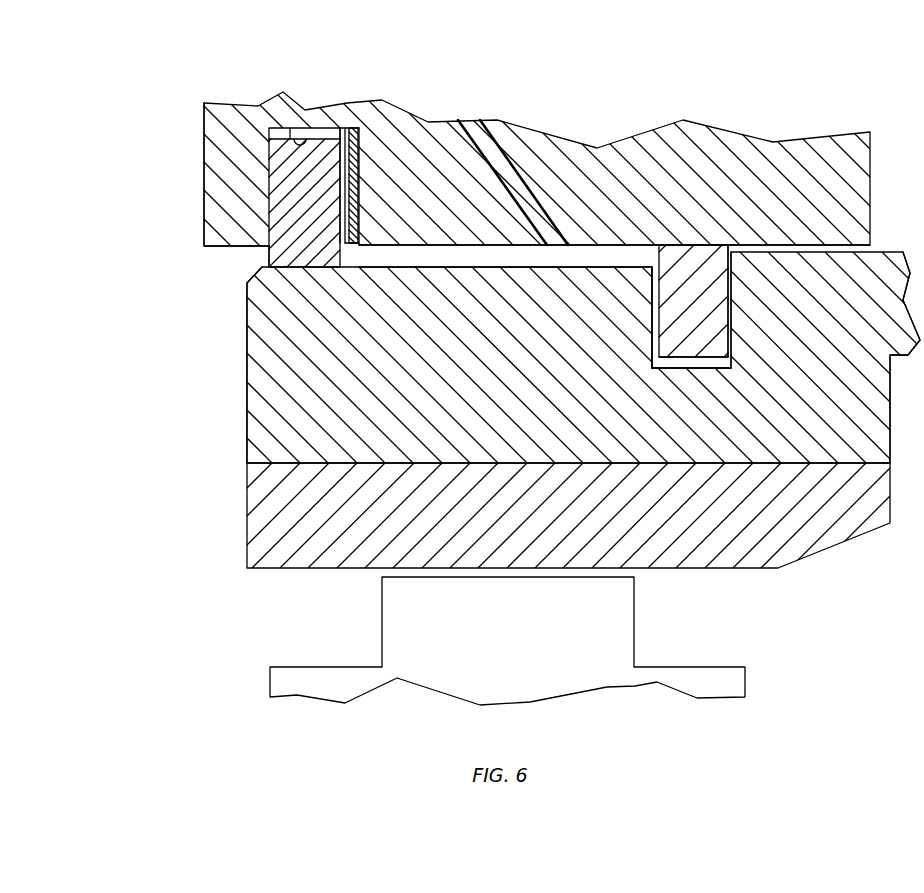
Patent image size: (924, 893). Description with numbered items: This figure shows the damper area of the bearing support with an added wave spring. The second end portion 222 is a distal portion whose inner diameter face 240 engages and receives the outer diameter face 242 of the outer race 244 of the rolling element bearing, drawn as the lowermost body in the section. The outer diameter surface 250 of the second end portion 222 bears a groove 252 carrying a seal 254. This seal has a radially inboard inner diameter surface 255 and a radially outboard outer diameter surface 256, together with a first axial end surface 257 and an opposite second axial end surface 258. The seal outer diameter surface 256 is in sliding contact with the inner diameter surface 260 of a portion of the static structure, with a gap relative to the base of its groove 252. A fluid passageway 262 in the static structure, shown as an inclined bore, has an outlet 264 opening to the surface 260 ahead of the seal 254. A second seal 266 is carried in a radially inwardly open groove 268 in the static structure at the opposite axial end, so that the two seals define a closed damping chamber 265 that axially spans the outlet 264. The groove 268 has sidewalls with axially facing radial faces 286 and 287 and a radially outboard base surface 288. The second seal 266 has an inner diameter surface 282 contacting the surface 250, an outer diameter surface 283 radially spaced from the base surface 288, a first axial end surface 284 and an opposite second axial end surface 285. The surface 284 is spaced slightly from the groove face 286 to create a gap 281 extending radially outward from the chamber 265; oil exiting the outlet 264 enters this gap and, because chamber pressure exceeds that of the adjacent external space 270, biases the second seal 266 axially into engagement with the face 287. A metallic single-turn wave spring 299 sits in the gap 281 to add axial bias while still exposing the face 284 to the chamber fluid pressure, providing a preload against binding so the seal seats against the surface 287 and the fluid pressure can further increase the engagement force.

The second end portion 222 is at (551, 405).
The inner diameter face 240 is at (803, 463).
The outer diameter face 242 is at (500, 466).
The outer race 244 is at (747, 537).
The outer diameter surface 250 is at (640, 267).
The groove 252 is at (688, 334).
The seal 254 is at (710, 333).
The inner diameter surface 255 is at (692, 358).
The outer diameter surface 256 is at (718, 245).
The first axial end surface 257 is at (731, 318).
The second axial end surface 258 is at (652, 326).
The inner diameter surface 260 is at (537, 169).
The fluid passageway 262 is at (520, 187).
The outlet 264 is at (562, 248).
The damping chamber 265 is at (614, 252).
The second seal 266 is at (352, 127).
The groove 268 is at (282, 155).
The external space 270 is at (178, 300).
The gap 281 is at (344, 250).
The inner diameter surface 282 is at (290, 268).
The outer diameter surface 283 is at (279, 127).
The first axial end surface 284 is at (358, 157).
The second axial end surface 285 is at (268, 232).
The radial face 286 is at (337, 212).
The radial face 287 is at (347, 186).
The base surface 288 is at (306, 128).
The wave spring 299 is at (351, 222).